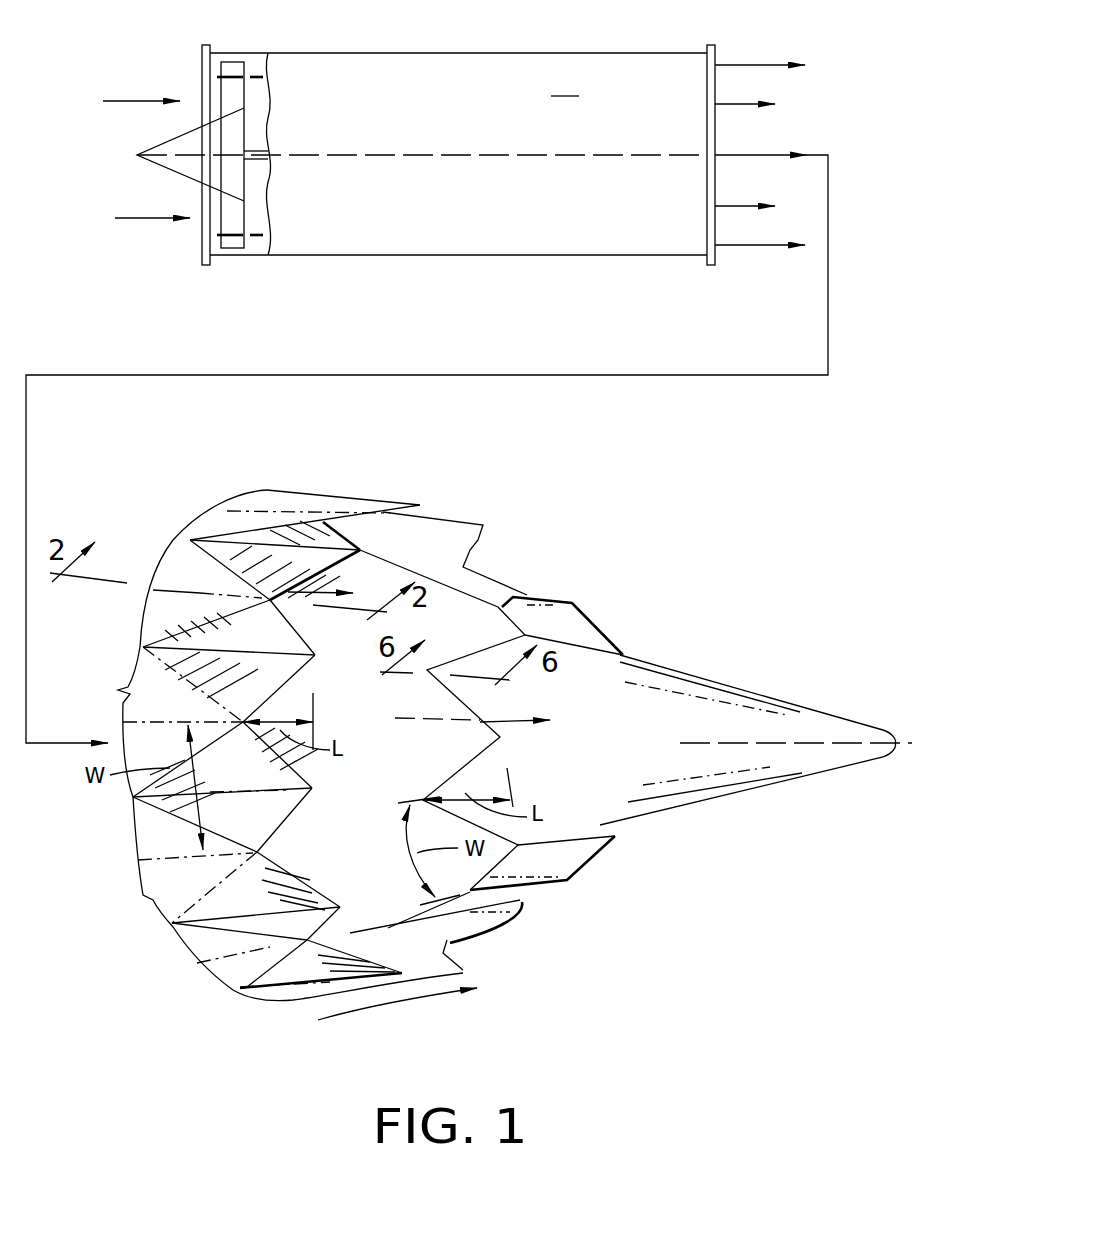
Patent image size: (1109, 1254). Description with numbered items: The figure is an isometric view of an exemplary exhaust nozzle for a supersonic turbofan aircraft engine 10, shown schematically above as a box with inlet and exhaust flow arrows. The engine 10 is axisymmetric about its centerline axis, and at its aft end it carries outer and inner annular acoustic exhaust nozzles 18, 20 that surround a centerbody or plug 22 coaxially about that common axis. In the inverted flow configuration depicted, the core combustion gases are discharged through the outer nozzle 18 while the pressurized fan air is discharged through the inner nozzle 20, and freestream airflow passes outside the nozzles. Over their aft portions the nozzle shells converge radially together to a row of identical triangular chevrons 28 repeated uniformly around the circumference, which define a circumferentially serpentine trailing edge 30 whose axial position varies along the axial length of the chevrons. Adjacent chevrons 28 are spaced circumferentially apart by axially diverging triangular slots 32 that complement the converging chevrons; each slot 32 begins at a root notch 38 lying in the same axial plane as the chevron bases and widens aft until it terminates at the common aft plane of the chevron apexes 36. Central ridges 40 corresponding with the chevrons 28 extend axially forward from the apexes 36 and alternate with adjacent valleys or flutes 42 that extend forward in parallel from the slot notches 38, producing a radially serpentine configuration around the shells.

The turbofan gas turbine aircraft engine 10 is at (426, 155).
The outer annular acoustic exhaust nozzle 18 is at (290, 721).
The inner annular acoustic exhaust nozzle 20 is at (517, 577).
The centerbody plug 22 is at (707, 677).
The triangular chevrons 28 is at (278, 895).
The serpentine trailing edge 30 is at (317, 902).
The axially diverging slots 32 is at (280, 715).
The chevron apex 36 is at (313, 789).
The root notch 38 is at (278, 603).
The central ridges 40 is at (310, 547).
The valleys or flutes 42 is at (217, 598).